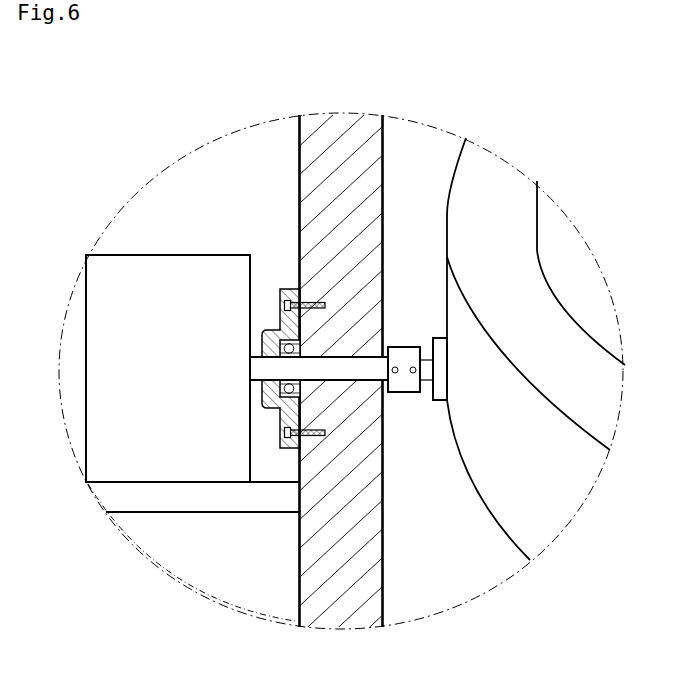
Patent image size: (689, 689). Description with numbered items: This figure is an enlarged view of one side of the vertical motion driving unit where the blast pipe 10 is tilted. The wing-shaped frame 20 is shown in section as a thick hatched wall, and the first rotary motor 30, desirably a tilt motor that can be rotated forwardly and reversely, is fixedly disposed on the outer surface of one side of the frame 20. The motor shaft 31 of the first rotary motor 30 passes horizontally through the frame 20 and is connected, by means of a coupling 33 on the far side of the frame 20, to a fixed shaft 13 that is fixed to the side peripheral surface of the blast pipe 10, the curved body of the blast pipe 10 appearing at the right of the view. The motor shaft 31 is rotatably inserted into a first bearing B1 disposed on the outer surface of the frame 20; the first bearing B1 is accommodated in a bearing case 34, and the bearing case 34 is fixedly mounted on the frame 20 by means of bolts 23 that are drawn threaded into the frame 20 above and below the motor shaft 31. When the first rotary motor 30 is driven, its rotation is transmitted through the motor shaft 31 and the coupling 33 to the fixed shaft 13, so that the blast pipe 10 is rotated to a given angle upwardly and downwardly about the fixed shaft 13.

The blast pipe 10 is at (540, 483).
The fixed shaft 13 is at (423, 348).
The frame 20 is at (313, 157).
The bolt 23 is at (283, 293).
The first rotary motor 30 is at (165, 277).
The motor shaft 31 is at (386, 400).
The coupling 33 is at (400, 347).
The bearing case 34 is at (288, 440).
The first bearing B1 is at (263, 397).